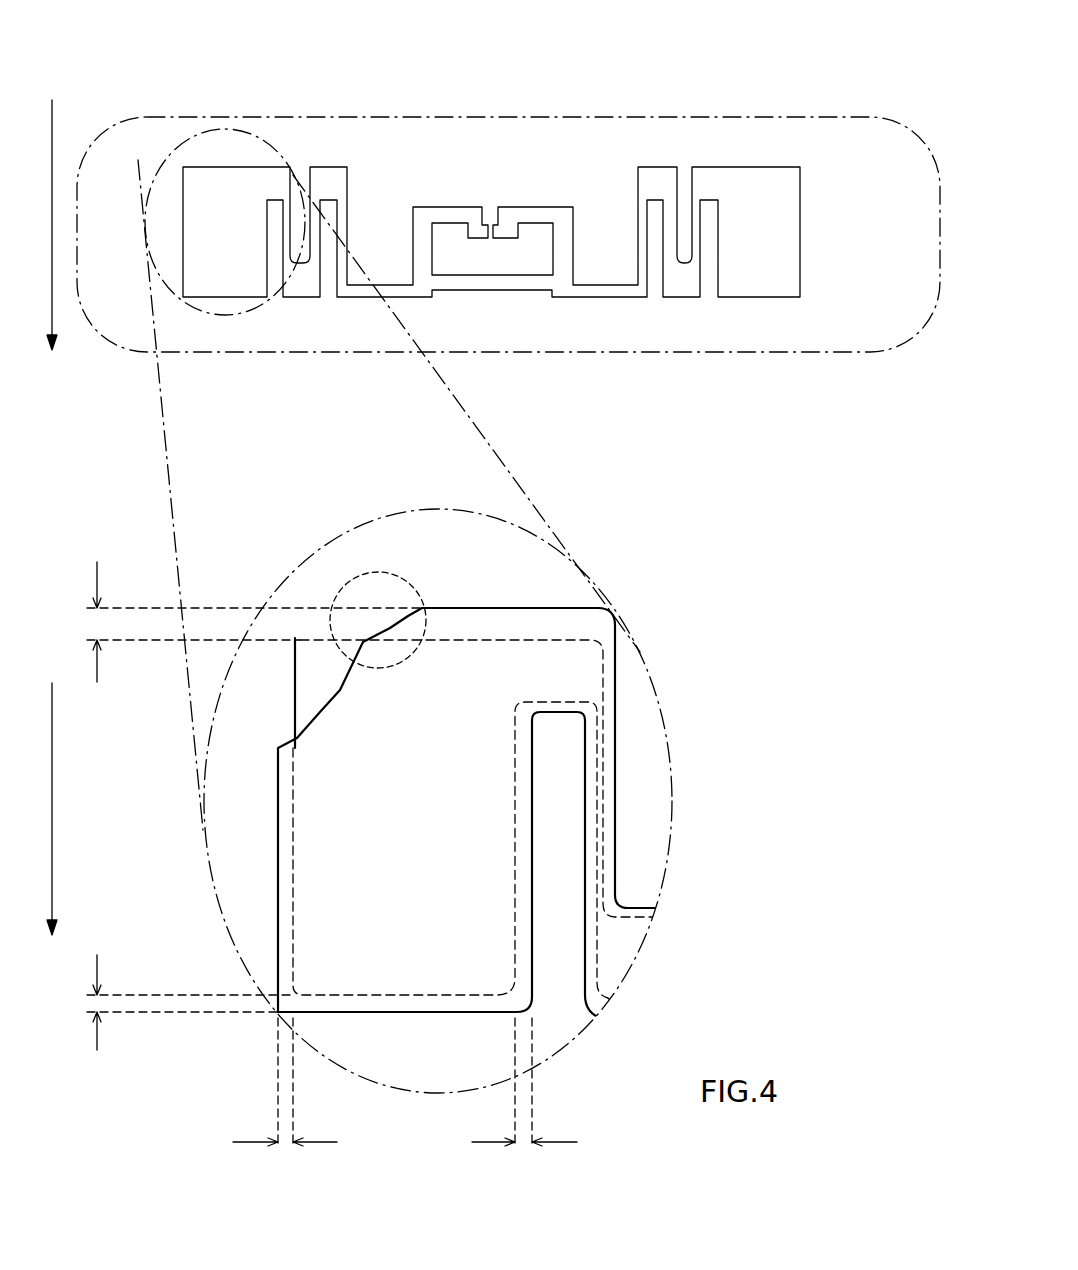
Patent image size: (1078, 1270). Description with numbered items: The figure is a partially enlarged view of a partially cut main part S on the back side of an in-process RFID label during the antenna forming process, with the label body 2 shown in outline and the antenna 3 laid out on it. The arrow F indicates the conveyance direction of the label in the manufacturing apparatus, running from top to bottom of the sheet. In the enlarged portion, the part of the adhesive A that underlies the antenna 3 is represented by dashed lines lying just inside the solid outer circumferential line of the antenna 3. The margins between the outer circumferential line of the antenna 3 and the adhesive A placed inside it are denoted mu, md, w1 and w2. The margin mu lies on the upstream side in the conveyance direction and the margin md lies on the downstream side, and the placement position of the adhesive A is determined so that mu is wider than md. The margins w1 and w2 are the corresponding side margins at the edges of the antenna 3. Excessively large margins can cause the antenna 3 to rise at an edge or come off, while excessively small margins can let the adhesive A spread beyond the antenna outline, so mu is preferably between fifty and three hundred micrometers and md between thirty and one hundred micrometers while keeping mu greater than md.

The main part S is at (508, 556).
The base sheet (label) 2 is at (158, 165).
The antenna 3 is at (243, 202).
The adhesive A is at (378, 611).
The arrow F (conveyance direction) F is at (41, 517).
The margin mu is at (240, 622).
The margin md is at (174, 1002).
The margin w1 is at (285, 1097).
The margin w2 is at (524, 1097).